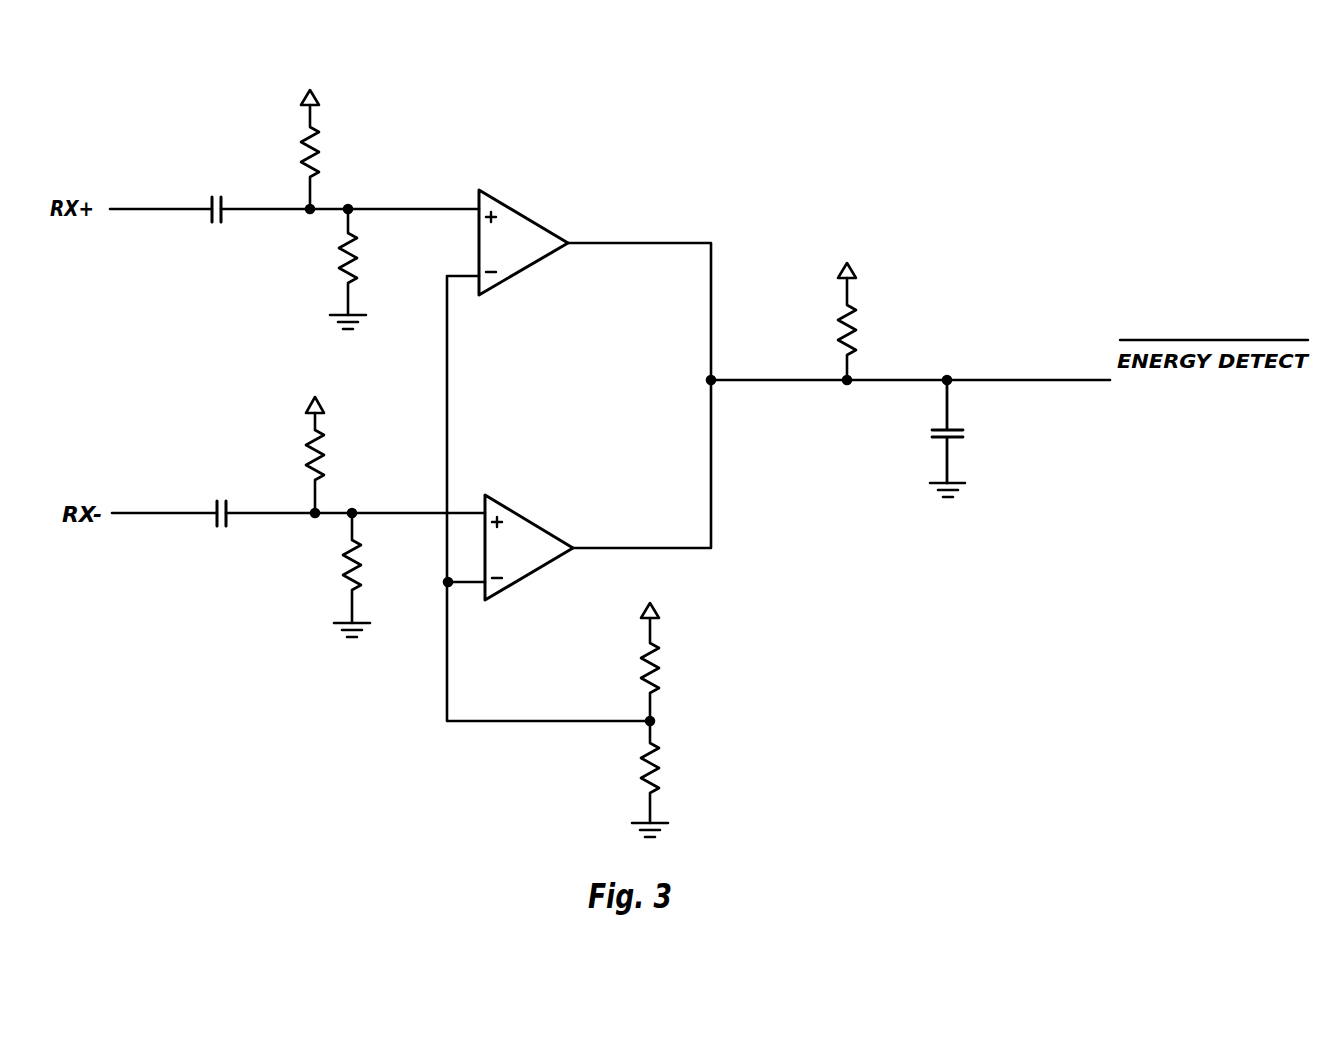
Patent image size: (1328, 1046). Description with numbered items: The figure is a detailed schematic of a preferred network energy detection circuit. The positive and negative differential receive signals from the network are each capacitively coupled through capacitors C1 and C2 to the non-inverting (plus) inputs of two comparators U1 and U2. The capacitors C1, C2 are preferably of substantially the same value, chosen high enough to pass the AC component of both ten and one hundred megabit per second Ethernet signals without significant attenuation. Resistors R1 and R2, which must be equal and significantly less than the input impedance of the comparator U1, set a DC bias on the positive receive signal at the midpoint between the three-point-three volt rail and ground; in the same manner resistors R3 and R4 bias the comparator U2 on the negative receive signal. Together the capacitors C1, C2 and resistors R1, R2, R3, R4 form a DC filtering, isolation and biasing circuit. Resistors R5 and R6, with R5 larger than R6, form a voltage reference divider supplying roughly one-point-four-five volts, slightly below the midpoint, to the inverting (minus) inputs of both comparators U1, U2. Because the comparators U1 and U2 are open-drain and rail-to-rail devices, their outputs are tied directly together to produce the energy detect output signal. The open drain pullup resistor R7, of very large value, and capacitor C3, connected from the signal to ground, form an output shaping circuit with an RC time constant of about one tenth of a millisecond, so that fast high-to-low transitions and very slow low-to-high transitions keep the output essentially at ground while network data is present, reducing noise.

The capacitor C1 is at (215, 192).
The capacitor C2 is at (220, 496).
The capacitor C3 is at (927, 438).
The resistor R1 is at (297, 133).
The resistor R2 is at (334, 269).
The resistor R3 is at (302, 441).
The resistor R4 is at (336, 575).
The resistor R5 is at (636, 646).
The resistor R6 is at (634, 779).
The open drain pullup resistor R7 is at (835, 306).
The comparator U1 is at (523, 239).
The comparator U2 is at (529, 544).